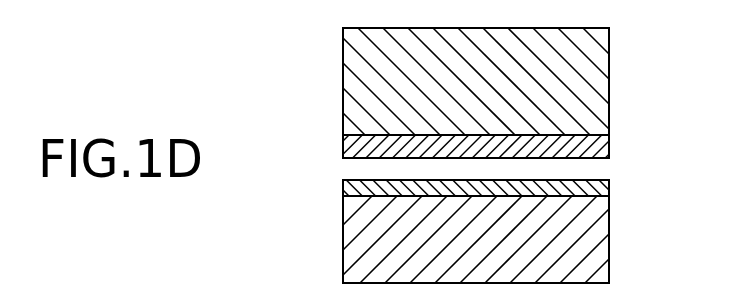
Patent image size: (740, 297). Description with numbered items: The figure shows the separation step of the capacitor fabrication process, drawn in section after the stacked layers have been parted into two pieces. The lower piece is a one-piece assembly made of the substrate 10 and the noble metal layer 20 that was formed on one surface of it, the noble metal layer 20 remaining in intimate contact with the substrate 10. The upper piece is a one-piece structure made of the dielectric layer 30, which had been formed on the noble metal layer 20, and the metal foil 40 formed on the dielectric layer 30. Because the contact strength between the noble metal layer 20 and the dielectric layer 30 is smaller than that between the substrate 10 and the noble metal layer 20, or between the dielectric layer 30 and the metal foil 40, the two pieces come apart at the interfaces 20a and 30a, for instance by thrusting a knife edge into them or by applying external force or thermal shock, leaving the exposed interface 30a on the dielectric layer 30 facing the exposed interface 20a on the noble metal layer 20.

The substrate 10 is at (595, 247).
The noble metal layer 20 is at (600, 192).
The interface 20a is at (363, 171).
The dielectric layer 30 is at (612, 148).
The interface 30a is at (345, 159).
The metal foil 40 is at (593, 82).